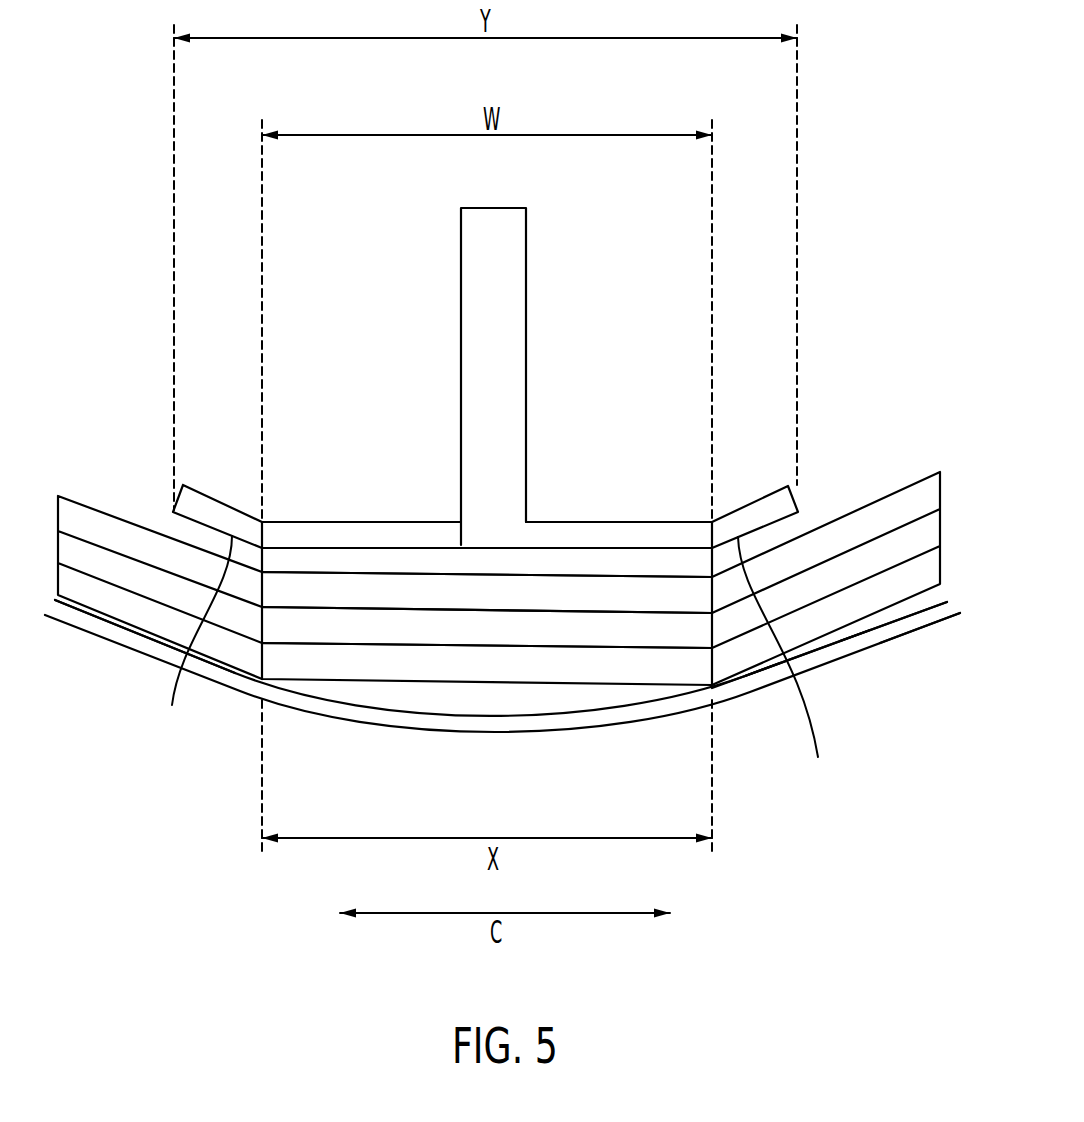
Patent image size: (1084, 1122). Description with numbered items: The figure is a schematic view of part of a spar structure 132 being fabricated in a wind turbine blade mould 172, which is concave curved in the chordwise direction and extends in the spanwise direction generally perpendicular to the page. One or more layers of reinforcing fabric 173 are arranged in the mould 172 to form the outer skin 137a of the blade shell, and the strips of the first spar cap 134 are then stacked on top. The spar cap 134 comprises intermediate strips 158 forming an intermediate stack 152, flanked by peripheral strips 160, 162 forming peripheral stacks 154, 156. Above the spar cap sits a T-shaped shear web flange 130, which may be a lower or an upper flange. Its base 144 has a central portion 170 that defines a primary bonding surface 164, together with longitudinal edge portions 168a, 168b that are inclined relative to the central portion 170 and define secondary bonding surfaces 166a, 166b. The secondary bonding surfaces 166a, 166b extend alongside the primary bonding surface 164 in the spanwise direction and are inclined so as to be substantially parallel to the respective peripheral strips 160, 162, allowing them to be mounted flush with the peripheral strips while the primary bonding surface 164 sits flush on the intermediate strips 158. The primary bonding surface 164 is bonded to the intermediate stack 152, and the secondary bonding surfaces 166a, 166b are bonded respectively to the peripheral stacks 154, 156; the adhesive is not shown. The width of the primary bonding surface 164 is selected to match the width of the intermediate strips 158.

The shear web flange 130 is at (422, 333).
The spar structure 132 is at (118, 226).
The first spar cap 134 is at (242, 738).
The outer skin 137a is at (877, 630).
The base 144 is at (592, 511).
The intermediate stack 152 is at (505, 687).
The peripheral stack 154 is at (142, 644).
The peripheral stack 156 is at (818, 641).
The intermediate strips 158 is at (433, 630).
The peripheral strip 160 is at (88, 517).
The peripheral strip 162 is at (930, 482).
The primary bonding surface 164 is at (380, 550).
The secondary bonding surface 166a is at (172, 705).
The secondary bonding surface 166b is at (818, 757).
The longitudinal edge portion 168a is at (187, 503).
The longitudinal edge portion 168b is at (778, 502).
The central portion 170 is at (445, 527).
The wind turbine blade mould 172 is at (753, 690).
The reinforcing fabric 173 is at (937, 612).